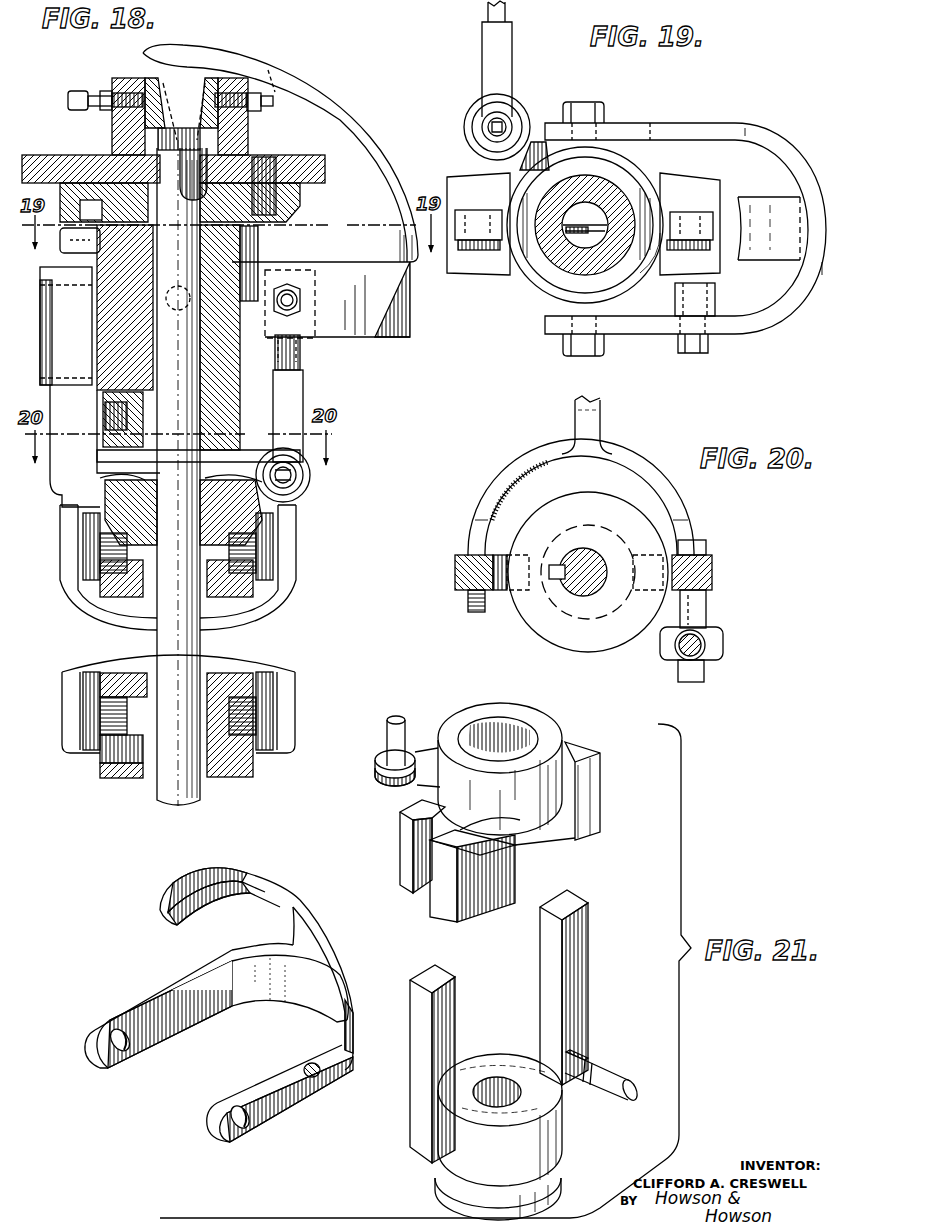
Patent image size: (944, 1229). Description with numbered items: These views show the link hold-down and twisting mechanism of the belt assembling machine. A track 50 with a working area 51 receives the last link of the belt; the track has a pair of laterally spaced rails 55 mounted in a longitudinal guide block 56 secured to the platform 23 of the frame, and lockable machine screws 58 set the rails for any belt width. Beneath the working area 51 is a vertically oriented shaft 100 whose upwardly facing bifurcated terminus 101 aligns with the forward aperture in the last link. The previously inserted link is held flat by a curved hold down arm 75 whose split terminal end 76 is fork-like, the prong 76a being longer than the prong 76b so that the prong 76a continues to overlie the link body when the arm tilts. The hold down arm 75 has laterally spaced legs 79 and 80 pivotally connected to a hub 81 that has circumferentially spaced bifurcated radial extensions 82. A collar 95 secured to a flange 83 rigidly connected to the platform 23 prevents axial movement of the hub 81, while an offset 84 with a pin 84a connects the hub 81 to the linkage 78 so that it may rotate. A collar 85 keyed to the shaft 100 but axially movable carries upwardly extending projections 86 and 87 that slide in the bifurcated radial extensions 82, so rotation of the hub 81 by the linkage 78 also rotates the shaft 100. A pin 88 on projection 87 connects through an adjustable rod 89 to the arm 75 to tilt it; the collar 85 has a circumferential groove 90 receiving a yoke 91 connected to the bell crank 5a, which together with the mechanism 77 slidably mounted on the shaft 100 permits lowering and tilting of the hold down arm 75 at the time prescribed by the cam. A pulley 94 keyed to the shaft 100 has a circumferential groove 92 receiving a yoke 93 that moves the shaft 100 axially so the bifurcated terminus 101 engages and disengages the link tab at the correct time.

In FIG. 20, the bell crank 5a is at (602, 420).
In FIG. 18, the platform 23 is at (300, 156).
In FIG. 18, the track 50 is at (119, 77).
In FIG. 18, the working area 51 is at (184, 72).
In FIG. 18, the rails 55 is at (160, 84).
In FIG. 18, the longitudinal guide block 56 is at (112, 139).
In FIG. 18, the lockable machine screws 58 is at (68, 102).
In FIG. 18, the hold down arm 75 is at (346, 118).
In FIG. 19, the hold down arm 75 is at (722, 120).
In FIG. 21, the hold down arm 75 is at (301, 898).
In FIG. 18, the split terminal end 76 is at (159, 50).
In FIG. 21, the split terminal end 76 is at (162, 906).
In FIG. 21, the prong 76a is at (207, 910).
In FIG. 21, the prong 76b is at (190, 880).
In FIG. 18, the mechanism 77 is at (58, 498).
In FIG. 19, the mechanism 77 is at (588, 100).
In FIG. 19, the linkage 78 is at (482, 59).
In FIG. 18, the leg 79 is at (262, 242).
In FIG. 19, the leg 79 is at (646, 123).
In FIG. 21, the leg 79 is at (130, 1012).
In FIG. 18, the leg 80 is at (332, 272).
In FIG. 19, the leg 80 is at (643, 335).
In FIG. 21, the leg 80 is at (250, 1086).
In FIG. 18, the hub 81 is at (312, 378).
In FIG. 19, the hub 81 is at (522, 283).
In FIG. 21, the hub 81 is at (537, 717).
In FIG. 18, the bifurcated radial extensions 82 is at (40, 330).
In FIG. 19, the bifurcated radial extensions 82 is at (448, 192).
In FIG. 20, the bifurcated radial extensions 82 is at (492, 583).
In FIG. 21, the bifurcated radial extensions 82 is at (585, 758).
In FIG. 18, the flange 83 is at (299, 211).
In FIG. 18, the offset 84 is at (60, 257).
In FIG. 19, the offset 84 is at (516, 138).
In FIG. 21, the offset 84 is at (417, 750).
In FIG. 21, the pin 84a is at (388, 735).
In FIG. 18, the collar 85 is at (116, 490).
In FIG. 20, the collar 85 is at (563, 498).
In FIG. 21, the collar 85 is at (563, 1128).
In FIG. 18, the projection 86 is at (40, 277).
In FIG. 19, the projection 86 is at (474, 215).
In FIG. 21, the projection 86 is at (456, 993).
In FIG. 18, the projection 87 is at (304, 400).
In FIG. 19, the projection 87 is at (692, 218).
In FIG. 20, the projection 87 is at (713, 566).
In FIG. 21, the projection 87 is at (588, 950).
In FIG. 19, the pin 88 is at (695, 299).
In FIG. 20, the pin 88 is at (710, 604).
In FIG. 21, the pin 88 is at (620, 1076).
In FIG. 18, the adjustable rod 89 is at (302, 344).
In FIG. 20, the adjustable rod 89 is at (728, 648).
In FIG. 18, the circumferential groove 90 is at (272, 548).
In FIG. 21, the circumferential groove 90 is at (556, 1162).
In FIG. 18, the yoke 91 is at (296, 582).
In FIG. 20, the yoke 91 is at (487, 490).
In FIG. 18, the circumferential groove 92 is at (282, 700).
In FIG. 18, the yoke 93 is at (292, 729).
In FIG. 18, the pulley 94 is at (114, 776).
In FIG. 18, the collar 95 is at (103, 395).
In FIG. 18, the shaft 100 is at (176, 803).
In FIG. 18, the bifurcated terminus 101 is at (186, 146).
In FIG. 19, the bifurcated terminus 101 is at (585, 205).